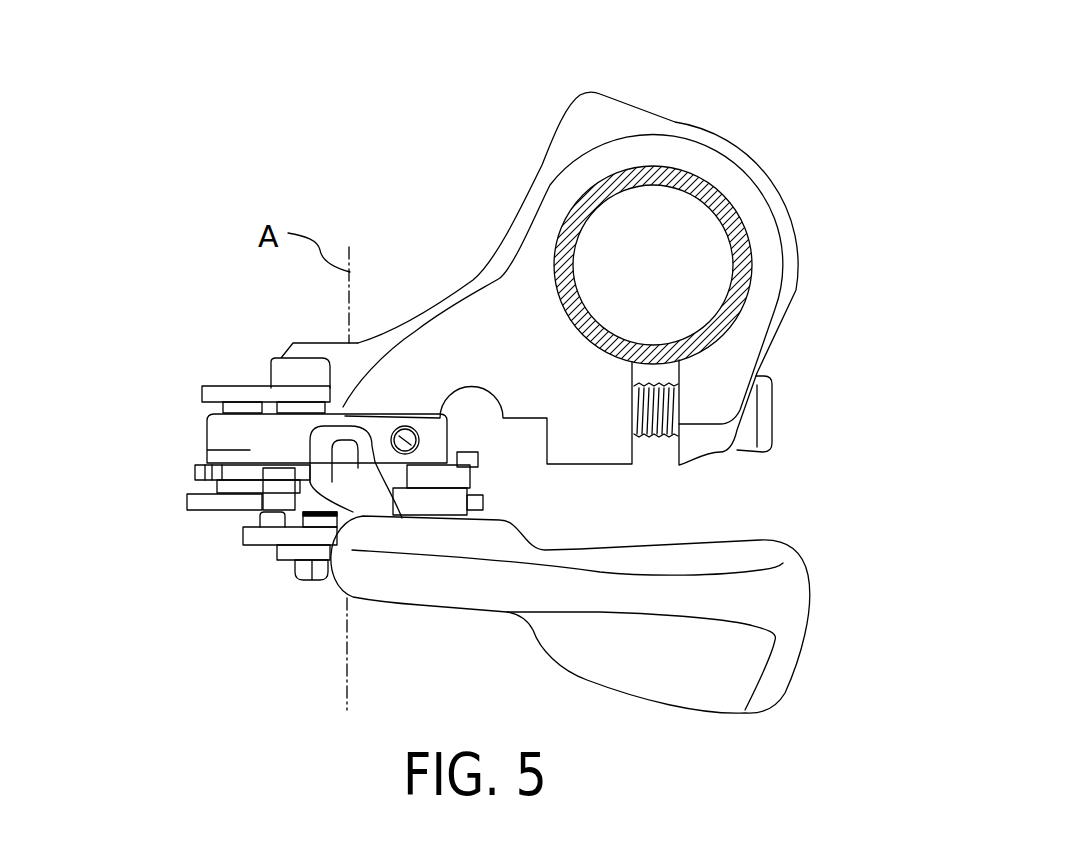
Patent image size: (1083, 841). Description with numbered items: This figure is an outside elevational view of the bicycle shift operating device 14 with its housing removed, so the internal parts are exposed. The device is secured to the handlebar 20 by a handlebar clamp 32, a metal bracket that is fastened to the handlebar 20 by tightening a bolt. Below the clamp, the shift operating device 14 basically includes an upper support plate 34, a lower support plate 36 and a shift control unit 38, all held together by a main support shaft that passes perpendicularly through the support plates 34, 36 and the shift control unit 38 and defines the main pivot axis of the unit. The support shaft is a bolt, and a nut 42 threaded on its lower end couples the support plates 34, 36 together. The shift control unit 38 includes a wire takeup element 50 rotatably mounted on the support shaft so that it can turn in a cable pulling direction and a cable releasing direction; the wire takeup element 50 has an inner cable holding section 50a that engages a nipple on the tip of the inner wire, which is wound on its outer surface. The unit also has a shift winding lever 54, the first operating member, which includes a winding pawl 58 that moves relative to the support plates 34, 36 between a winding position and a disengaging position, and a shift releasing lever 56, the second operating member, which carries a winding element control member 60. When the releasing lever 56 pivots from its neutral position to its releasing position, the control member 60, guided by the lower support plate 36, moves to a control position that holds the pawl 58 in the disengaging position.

The bicycle shift operating device 14 is at (245, 310).
The handlebar 20 is at (733, 198).
The handlebar clamp 32 is at (697, 127).
The upper support plate 34 is at (196, 388).
The lower support plate 36 is at (486, 478).
The shift control unit 38 is at (168, 413).
The nut 42 is at (300, 584).
The wire takeup element 50 is at (200, 432).
The inner cable holding section 50a is at (390, 470).
The shift operating (winding) lever 54 is at (796, 677).
The shift operating (releasing) lever 56 is at (180, 512).
The winding pawl 58 is at (268, 492).
The winding element control member 60 is at (185, 474).